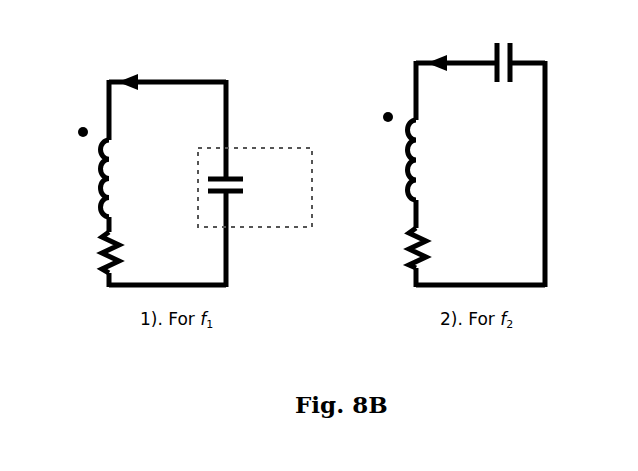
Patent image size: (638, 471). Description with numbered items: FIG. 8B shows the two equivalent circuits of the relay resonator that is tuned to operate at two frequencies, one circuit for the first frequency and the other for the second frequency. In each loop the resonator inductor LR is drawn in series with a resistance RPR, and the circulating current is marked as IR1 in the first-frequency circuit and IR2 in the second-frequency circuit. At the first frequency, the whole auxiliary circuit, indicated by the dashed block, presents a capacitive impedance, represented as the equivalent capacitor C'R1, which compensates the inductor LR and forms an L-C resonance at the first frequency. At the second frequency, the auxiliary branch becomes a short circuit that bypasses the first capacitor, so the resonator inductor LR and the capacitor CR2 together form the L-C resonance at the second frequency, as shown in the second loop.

The resonator current at frequency f1 IR1 is at (130, 65).
The resonator current at frequency f2 IR2 is at (436, 44).
The relay resonator inductor LR is at (238, 168).
The resonator parasitic resistance RPR is at (241, 250).
The equivalent resonator capacitor at f1 C'R1 is at (255, 187).
The second resonator capacitor CR2 is at (504, 49).